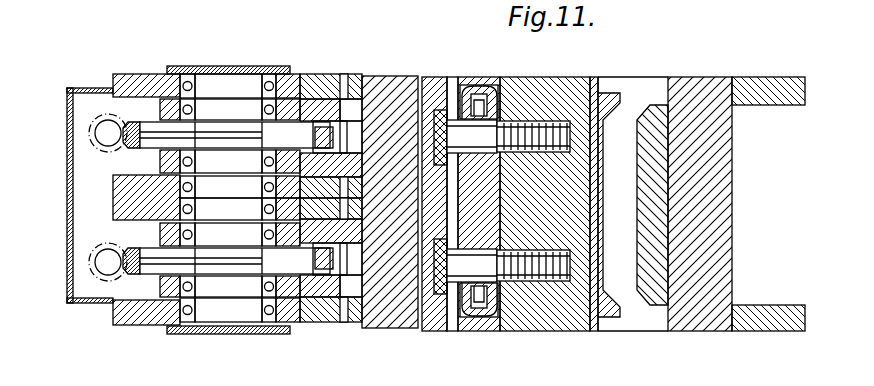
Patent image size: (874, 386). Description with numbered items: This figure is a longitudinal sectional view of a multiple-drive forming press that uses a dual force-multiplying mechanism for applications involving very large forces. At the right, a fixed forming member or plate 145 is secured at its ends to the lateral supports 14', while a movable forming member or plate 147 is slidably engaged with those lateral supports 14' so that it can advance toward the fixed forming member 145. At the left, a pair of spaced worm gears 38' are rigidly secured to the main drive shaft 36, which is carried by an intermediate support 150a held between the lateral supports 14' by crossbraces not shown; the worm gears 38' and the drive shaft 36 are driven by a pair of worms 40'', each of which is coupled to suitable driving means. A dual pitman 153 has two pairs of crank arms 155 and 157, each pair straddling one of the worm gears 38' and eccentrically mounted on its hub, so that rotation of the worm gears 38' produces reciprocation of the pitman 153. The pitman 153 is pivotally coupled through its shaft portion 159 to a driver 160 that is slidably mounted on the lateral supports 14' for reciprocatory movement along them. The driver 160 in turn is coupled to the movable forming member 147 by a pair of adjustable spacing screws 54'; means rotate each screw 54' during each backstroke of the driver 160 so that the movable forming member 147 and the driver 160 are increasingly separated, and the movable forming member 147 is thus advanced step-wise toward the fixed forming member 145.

The worm gear 38' is at (210, 195).
The worm 40'' is at (75, 197).
The intermediate support 150a is at (112, 199).
The drive shaft 36 is at (225, 335).
The crank arms 155 is at (331, 75).
The crank arms 157 is at (305, 310).
The dual pitman 153 is at (390, 330).
The shaft portion 159 is at (399, 76).
The driver 160 is at (446, 76).
The adjustable spacing screw 54' is at (517, 209).
The movable forming member 147 is at (583, 334).
The fixed forming member 145 is at (660, 176).
The lateral support 14' is at (768, 211).